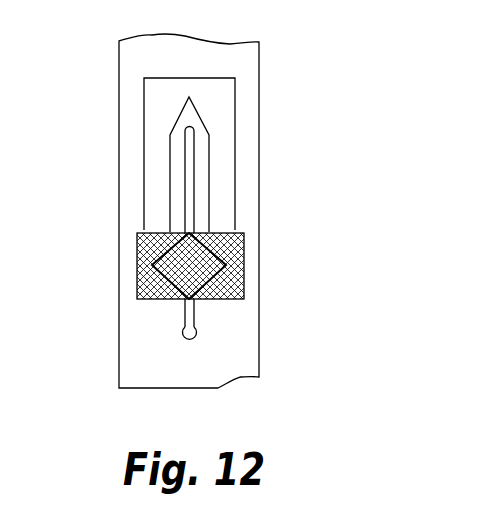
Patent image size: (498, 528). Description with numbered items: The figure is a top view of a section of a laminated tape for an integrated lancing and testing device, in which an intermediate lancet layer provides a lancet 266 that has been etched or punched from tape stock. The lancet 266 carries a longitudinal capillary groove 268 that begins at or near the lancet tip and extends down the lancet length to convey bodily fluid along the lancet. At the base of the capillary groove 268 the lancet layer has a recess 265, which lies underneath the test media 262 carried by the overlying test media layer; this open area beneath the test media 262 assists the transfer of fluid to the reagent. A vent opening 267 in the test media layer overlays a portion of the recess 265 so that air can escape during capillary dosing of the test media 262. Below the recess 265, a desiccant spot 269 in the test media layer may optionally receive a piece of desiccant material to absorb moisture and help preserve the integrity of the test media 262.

The test media 262 is at (244, 285).
The recess 265 is at (145, 252).
The lancet 266 is at (202, 138).
The vent opening 267 is at (177, 310).
The capillary groove 268 is at (195, 193).
The desiccant spot 269 is at (196, 336).